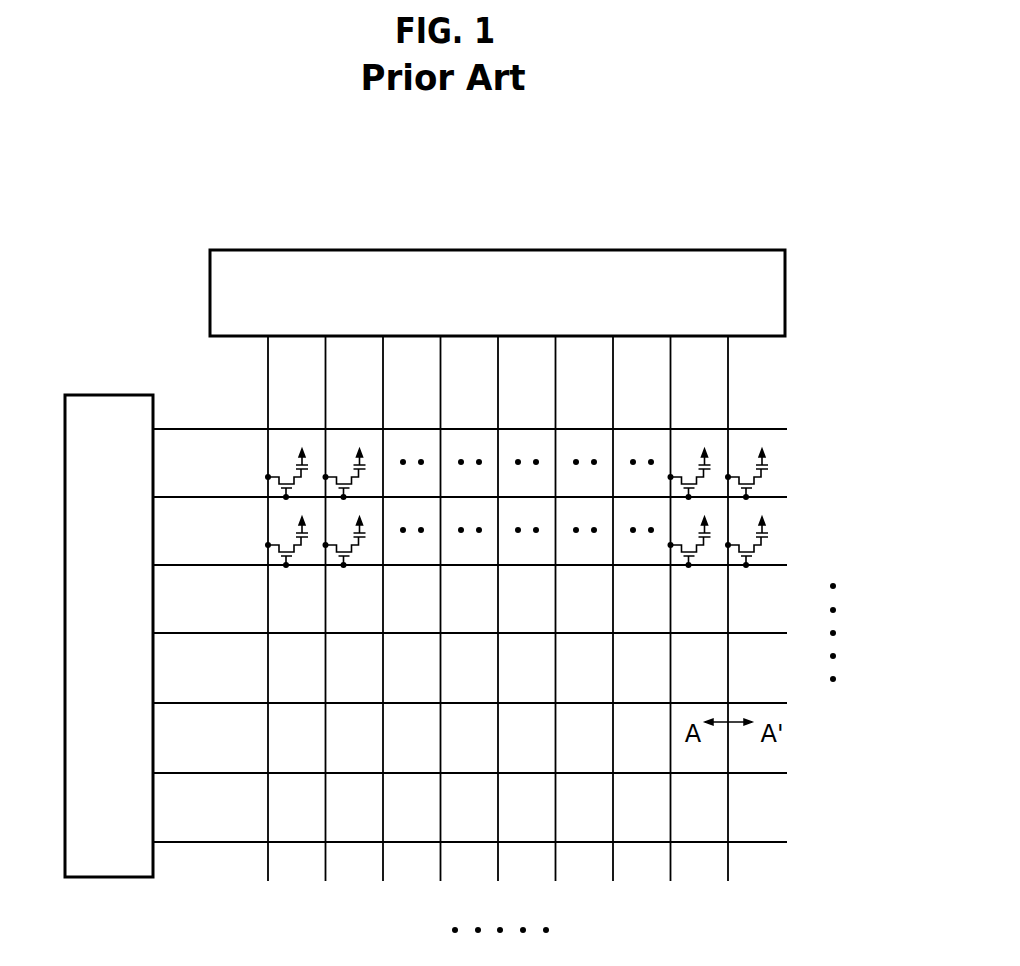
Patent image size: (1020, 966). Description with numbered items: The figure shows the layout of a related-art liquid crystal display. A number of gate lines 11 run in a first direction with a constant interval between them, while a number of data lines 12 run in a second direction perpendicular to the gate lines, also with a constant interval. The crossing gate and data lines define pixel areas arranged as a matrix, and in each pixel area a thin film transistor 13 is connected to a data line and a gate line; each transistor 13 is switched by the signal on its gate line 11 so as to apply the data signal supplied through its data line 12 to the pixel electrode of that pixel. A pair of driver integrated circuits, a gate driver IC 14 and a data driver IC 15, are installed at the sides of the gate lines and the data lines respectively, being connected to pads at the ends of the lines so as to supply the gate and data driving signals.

The gate line 11 is at (752, 428).
The data line 12 is at (729, 862).
The thin film transistor 13 is at (285, 463).
The gate driver IC 14 is at (122, 877).
The data driver IC 15 is at (785, 293).